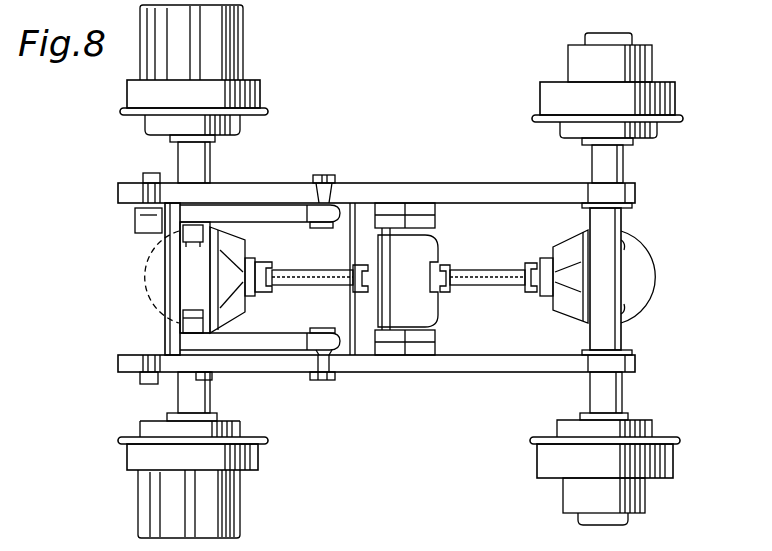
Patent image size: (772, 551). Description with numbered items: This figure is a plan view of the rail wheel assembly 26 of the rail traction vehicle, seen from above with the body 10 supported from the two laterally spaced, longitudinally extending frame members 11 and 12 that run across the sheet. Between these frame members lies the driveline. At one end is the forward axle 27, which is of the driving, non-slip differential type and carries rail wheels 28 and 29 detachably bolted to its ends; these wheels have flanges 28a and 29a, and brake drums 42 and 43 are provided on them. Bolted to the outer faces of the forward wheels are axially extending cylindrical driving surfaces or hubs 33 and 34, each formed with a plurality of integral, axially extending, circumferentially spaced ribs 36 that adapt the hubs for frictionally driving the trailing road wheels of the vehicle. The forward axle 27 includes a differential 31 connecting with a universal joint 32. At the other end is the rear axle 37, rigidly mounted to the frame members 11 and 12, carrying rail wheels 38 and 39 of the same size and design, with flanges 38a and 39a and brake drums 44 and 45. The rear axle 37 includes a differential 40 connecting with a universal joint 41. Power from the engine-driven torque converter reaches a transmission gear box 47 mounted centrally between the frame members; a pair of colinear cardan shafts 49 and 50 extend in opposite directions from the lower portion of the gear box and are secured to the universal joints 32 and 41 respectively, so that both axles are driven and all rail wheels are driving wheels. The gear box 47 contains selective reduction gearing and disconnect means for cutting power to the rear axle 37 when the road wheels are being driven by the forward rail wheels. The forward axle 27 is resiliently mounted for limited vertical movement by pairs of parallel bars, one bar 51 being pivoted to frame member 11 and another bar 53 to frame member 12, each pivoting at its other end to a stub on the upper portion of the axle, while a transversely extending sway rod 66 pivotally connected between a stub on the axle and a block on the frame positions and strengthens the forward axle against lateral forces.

The body 10 is at (126, 393).
The frame member 11 is at (481, 374).
The frame member 12 is at (450, 183).
The rail wheel assembly 26 is at (344, 172).
The forward axle 27 is at (205, 162).
The rail wheel 28 is at (262, 92).
The flange 28a is at (269, 112).
The rail wheel 29 is at (259, 452).
The flange 29a is at (120, 440).
The differential 31 is at (154, 270).
The universal joint 32 is at (271, 262).
The hub 33 is at (232, 32).
The hub 34 is at (228, 513).
The ribs 36 is at (167, 62).
The rear axle 37 is at (624, 165).
The rail wheel 38 is at (667, 100).
The flange 38a is at (533, 119).
The rail wheel 39 is at (668, 458).
The flange 39a is at (538, 441).
The differential 40 is at (648, 268).
The universal joint 41 is at (525, 262).
The brake drum 42 is at (240, 130).
The brake drum 43 is at (217, 419).
The brake drum 44 is at (565, 139).
The brake drum 45 is at (566, 420).
The transmission gear box 47 is at (440, 243).
The cardan shaft 49 is at (300, 285).
The cardan shaft 50 is at (508, 283).
The parallel bar 51 is at (268, 342).
The parallel bar 53 is at (257, 222).
The sway rod 66 is at (168, 250).